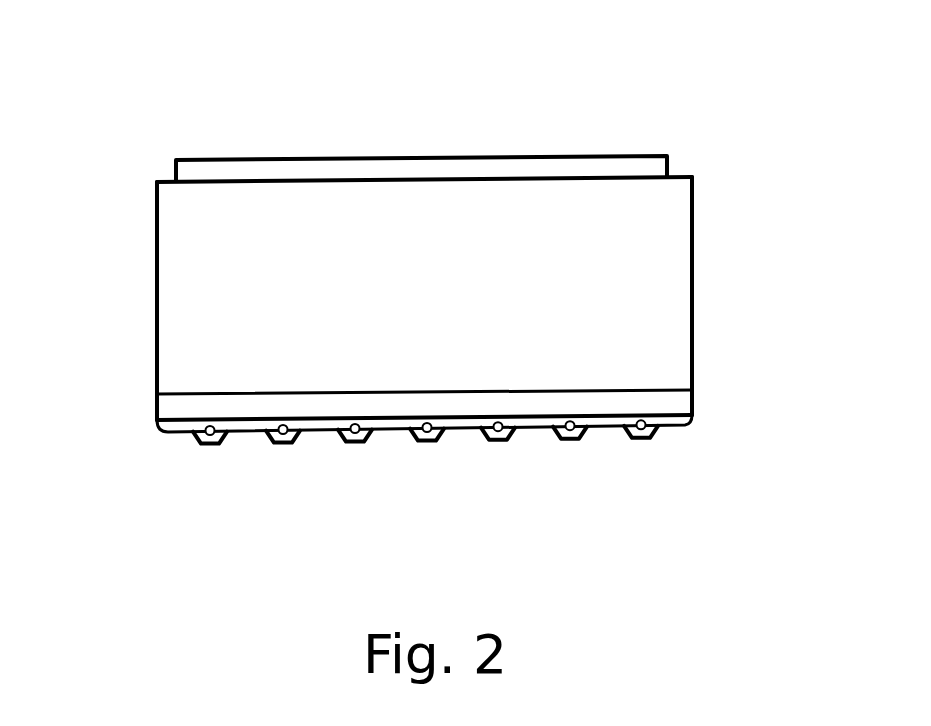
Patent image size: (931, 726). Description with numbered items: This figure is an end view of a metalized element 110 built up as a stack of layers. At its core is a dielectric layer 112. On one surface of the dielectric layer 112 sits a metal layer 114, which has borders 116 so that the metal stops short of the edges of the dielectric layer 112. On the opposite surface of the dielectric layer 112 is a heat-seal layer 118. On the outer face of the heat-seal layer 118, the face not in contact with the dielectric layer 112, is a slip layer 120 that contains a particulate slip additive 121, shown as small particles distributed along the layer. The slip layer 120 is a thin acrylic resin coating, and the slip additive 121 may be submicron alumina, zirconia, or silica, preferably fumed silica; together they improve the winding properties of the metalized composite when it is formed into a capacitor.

The metalized element 110 is at (324, 116).
The dielectric layer 112 is at (657, 215).
The metal layer 114 is at (594, 165).
The borders 116 is at (166, 181).
The heat-seal layer 118 is at (681, 398).
The slip layer 120 is at (371, 462).
The particulate slip additive 121 is at (277, 443).